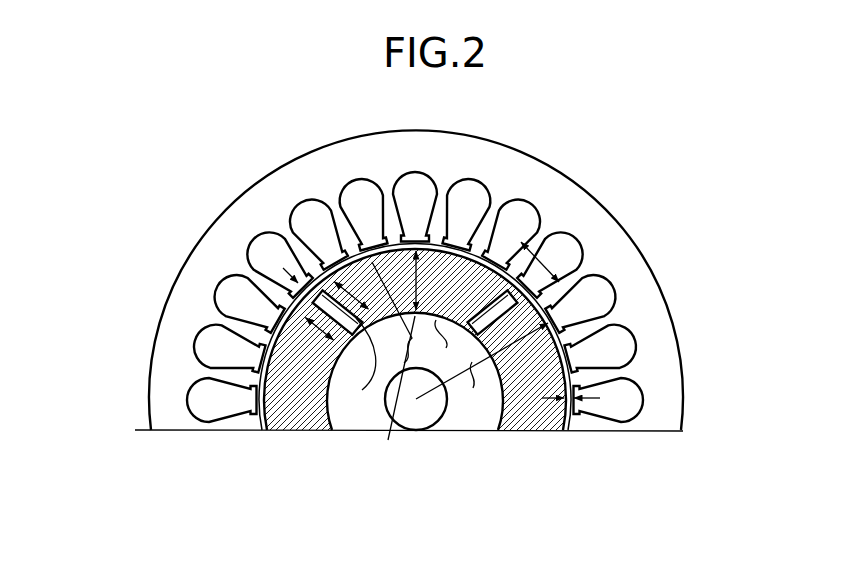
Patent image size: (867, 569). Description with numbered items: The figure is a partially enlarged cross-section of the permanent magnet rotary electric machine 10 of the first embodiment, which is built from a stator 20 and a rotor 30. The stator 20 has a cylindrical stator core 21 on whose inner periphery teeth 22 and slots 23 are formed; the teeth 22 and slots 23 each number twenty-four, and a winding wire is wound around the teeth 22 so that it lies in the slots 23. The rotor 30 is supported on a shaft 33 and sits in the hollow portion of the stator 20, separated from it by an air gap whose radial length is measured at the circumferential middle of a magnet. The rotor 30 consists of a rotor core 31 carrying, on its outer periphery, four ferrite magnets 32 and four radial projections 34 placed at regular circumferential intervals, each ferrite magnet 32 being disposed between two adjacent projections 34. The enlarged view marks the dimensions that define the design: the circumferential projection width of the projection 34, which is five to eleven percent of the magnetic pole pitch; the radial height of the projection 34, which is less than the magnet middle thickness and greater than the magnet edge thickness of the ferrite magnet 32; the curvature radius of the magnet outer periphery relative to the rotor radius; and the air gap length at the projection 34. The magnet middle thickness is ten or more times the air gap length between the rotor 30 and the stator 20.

The permanent magnet rotary electric machine 10 is at (603, 179).
The stator 20 is at (620, 223).
The stator core 21 is at (626, 258).
The teeth 22 is at (578, 374).
The slots 23 is at (613, 341).
The rotor 30 is at (347, 277).
The rotor core 31 is at (347, 418).
The ferrite magnet 32 is at (297, 413).
The shaft 33 is at (422, 413).
The projection 34 is at (508, 303).